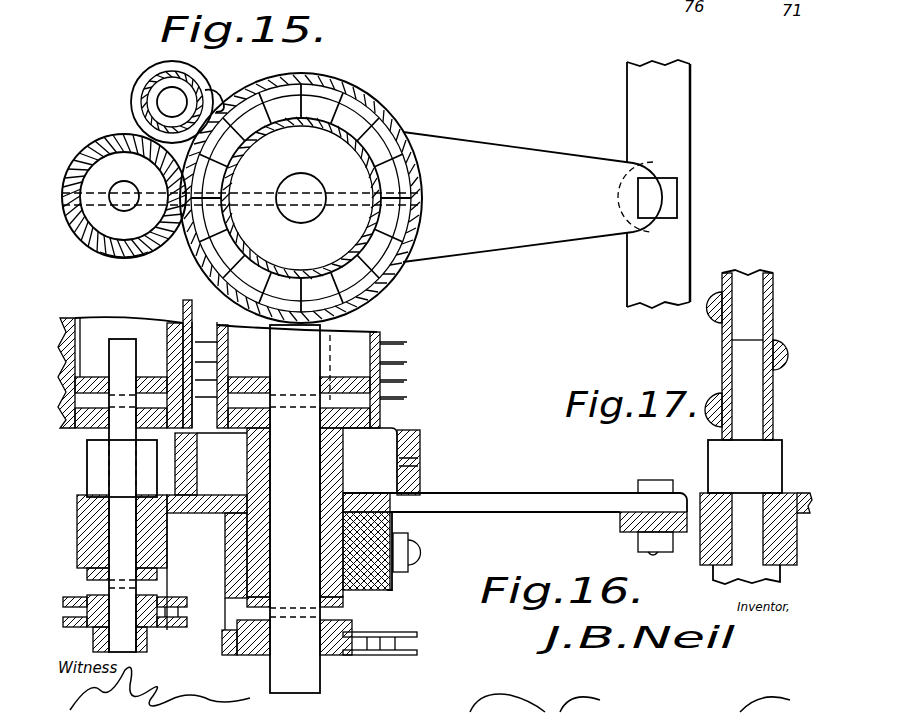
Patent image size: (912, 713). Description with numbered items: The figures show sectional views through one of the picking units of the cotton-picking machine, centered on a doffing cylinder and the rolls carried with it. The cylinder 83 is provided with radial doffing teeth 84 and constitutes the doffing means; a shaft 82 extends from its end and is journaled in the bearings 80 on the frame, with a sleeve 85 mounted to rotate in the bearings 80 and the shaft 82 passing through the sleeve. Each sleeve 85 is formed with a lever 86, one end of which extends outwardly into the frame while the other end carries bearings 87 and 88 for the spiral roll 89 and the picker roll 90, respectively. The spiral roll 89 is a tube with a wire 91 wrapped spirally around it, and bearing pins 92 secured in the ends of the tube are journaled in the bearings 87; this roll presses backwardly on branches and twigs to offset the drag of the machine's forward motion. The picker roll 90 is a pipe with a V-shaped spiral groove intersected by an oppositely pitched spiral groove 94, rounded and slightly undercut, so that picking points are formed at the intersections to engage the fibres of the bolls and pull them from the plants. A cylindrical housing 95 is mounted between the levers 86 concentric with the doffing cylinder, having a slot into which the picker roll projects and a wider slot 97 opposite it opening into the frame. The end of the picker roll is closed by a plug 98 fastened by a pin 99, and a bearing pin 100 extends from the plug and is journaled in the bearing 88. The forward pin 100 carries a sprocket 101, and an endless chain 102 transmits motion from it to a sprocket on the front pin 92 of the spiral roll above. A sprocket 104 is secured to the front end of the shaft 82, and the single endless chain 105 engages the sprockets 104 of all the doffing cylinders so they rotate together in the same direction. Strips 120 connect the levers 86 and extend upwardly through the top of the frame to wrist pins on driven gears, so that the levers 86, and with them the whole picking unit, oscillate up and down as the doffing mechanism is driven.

In FIG. 16, the bearings 80 is at (390, 588).
In FIG. 15, the shafts 82 is at (305, 208).
In FIG. 16, the shafts 82 is at (312, 485).
In FIG. 15, the cylinders 83 is at (270, 127).
In FIG. 16, the cylinders 83 is at (370, 330).
In FIG. 15, the doffing teeth 84 is at (377, 103).
In FIG. 16, the doffing teeth 84 is at (405, 362).
In FIG. 16, the sleeves 85 is at (335, 552).
In FIG. 15, the lever 86 is at (563, 163).
In FIG. 16, the lever 86 is at (497, 497).
In FIG. 15, the bearings 87 is at (216, 100).
In FIG. 17, the bearings 87 is at (788, 530).
In FIG. 15, the bearings 88 is at (155, 90).
In FIG. 16, the bearings 88 is at (167, 543).
In FIG. 17, the spiral roll 89 is at (775, 300).
In FIG. 15, the picker roll 90 is at (115, 260).
In FIG. 15, the spirally wrapped wire 91 is at (143, 108).
In FIG. 17, the spirally wrapped wire 91 is at (712, 305).
In FIG. 17, the bearing pins 92 is at (755, 437).
In FIG. 15, the spiral groove 94 is at (78, 155).
In FIG. 16, the spiral groove 94 is at (173, 317).
In FIG. 15, the cylindrical housing 95 is at (343, 100).
In FIG. 15, the wider slot 97 is at (425, 188).
In FIG. 15, the plugs 98 is at (103, 212).
In FIG. 16, the plugs 98 is at (92, 373).
In FIG. 15, the pins 99 is at (100, 187).
In FIG. 16, the pins 99 is at (93, 400).
In FIG. 16, the bearing pins 100 is at (122, 510).
In FIG. 16, the sprocket 101 is at (160, 600).
In FIG. 16, the endless chain 102 is at (160, 625).
In FIG. 16, the sprocket 104 is at (340, 660).
In FIG. 16, the endless chain 105 is at (410, 660).
In FIG. 15, the strips 120 is at (683, 128).
In FIG. 16, the strips 120 is at (620, 528).